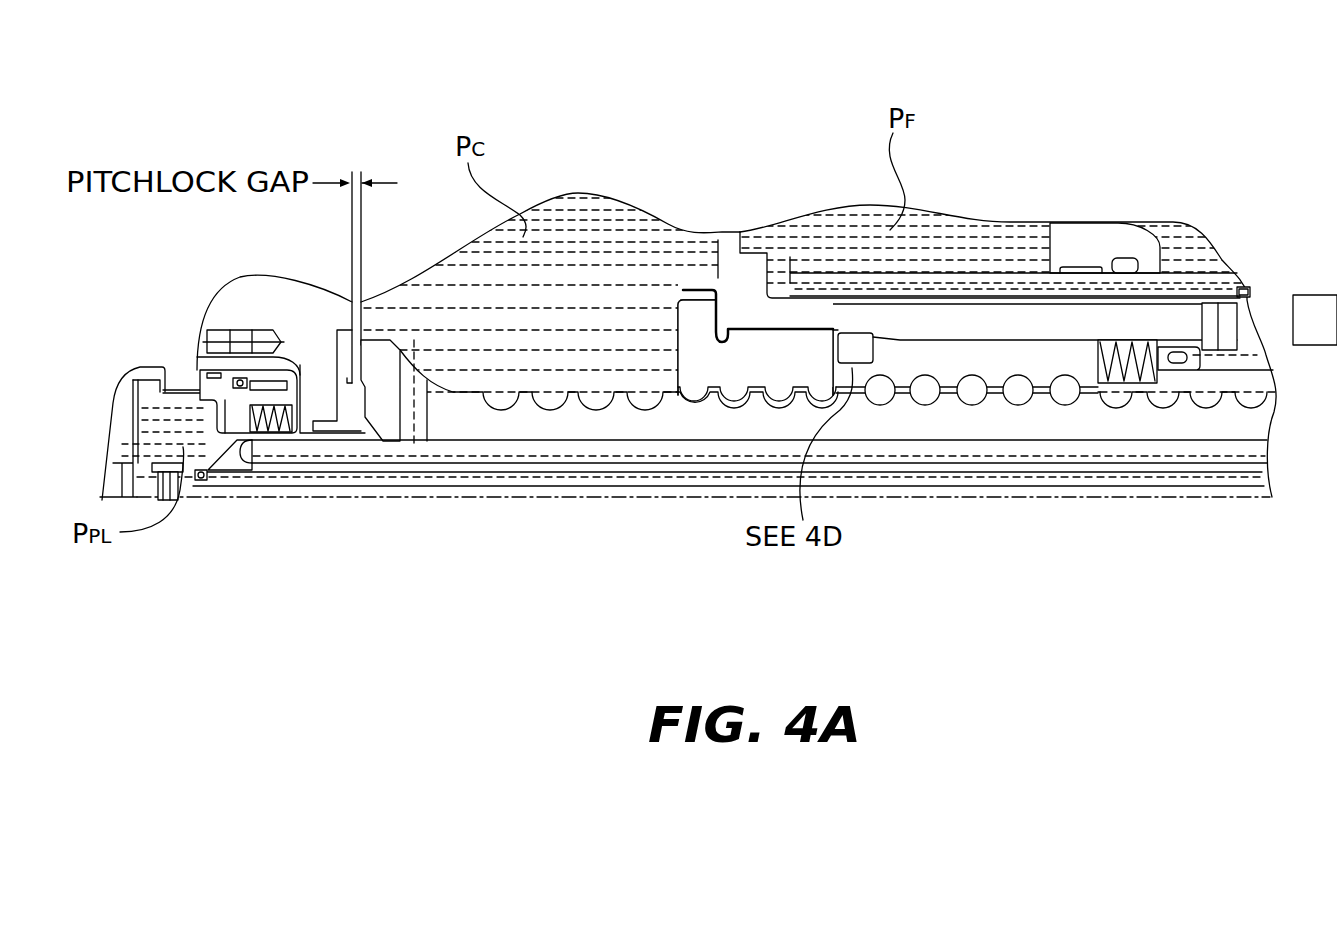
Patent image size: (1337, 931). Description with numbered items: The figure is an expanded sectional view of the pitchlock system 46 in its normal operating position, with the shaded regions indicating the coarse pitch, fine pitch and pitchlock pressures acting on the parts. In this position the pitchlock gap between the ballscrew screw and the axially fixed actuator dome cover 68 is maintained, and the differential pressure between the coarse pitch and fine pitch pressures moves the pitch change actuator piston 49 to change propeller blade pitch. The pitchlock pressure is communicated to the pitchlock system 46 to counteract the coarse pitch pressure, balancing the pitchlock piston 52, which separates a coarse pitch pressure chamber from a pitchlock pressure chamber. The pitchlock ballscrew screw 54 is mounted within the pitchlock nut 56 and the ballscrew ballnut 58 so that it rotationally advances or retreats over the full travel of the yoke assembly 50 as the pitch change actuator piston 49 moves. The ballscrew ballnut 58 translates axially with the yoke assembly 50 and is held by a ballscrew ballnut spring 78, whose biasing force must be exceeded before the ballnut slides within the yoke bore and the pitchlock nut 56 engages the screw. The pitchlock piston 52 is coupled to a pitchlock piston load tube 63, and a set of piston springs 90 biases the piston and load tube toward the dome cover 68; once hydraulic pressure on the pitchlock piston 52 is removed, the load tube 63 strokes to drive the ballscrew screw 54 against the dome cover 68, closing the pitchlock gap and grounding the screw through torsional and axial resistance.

The pitchlock system 46 is at (1056, 98).
The pitch change actuator piston 49 is at (718, 240).
The yoke assembly 50 is at (1293, 322).
The pitchlock piston 52 is at (175, 385).
The pitchlock ballscrew screw 54 is at (877, 428).
The pitchlock nut 56 is at (678, 290).
The ballscrew ballnut 58 is at (1018, 347).
The pitchlock piston load tube 63 is at (235, 467).
The actuator dome cover 68 is at (220, 320).
The ballscrew ballnut spring 78 is at (1123, 347).
The piston springs 90 is at (273, 412).